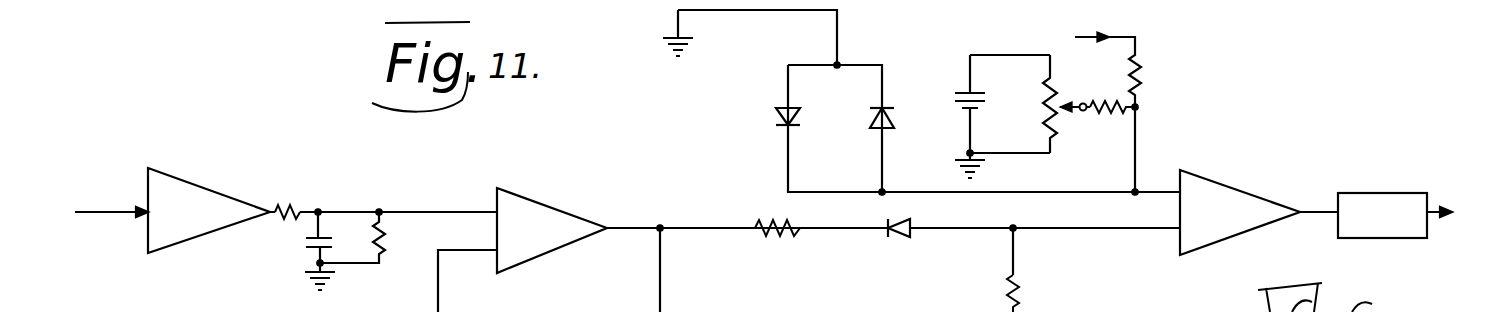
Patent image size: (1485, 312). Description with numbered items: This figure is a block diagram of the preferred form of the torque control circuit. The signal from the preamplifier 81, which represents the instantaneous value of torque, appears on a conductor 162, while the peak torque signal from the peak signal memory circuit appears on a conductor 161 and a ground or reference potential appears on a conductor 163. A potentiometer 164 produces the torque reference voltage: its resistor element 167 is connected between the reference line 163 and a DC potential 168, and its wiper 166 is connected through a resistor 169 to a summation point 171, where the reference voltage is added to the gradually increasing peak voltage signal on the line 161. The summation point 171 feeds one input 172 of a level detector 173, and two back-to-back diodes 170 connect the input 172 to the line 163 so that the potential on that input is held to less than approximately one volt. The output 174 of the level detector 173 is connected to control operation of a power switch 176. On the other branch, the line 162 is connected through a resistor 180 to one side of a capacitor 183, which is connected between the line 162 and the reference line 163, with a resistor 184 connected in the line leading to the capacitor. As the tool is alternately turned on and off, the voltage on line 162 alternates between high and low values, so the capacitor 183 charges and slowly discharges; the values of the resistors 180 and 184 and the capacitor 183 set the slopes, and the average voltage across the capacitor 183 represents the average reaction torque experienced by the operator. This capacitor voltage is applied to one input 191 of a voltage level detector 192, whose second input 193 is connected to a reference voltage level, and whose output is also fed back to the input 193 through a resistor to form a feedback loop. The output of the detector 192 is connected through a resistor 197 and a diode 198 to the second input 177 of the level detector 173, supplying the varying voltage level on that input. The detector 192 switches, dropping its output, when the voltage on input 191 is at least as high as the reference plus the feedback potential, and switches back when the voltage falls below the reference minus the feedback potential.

The preamplifier 81 is at (183, 180).
The resistor 180 is at (286, 218).
The conductor 162 is at (312, 207).
The capacitor 183 is at (335, 238).
The resistor 184 is at (387, 232).
The conductor 163 is at (314, 278).
The input 191 is at (467, 210).
The voltage level detector 192 is at (560, 217).
The second input 193 is at (475, 253).
The resistor 197 is at (783, 233).
The diode 198 is at (905, 240).
The back-to-back diodes 170 is at (875, 128).
The DC potential 168 is at (963, 91).
The resistor element 167 is at (1047, 100).
The wiper 166 is at (1065, 103).
The potentiometer 164 is at (1067, 124).
The resistor 169 is at (1118, 114).
The conductor 161 is at (1128, 37).
The summation point 171 is at (1138, 106).
The input 172 is at (1153, 191).
The level detector 173 is at (1240, 226).
The second input 177 is at (1170, 233).
The output 174 is at (1322, 210).
The power switch 176 is at (1363, 240).